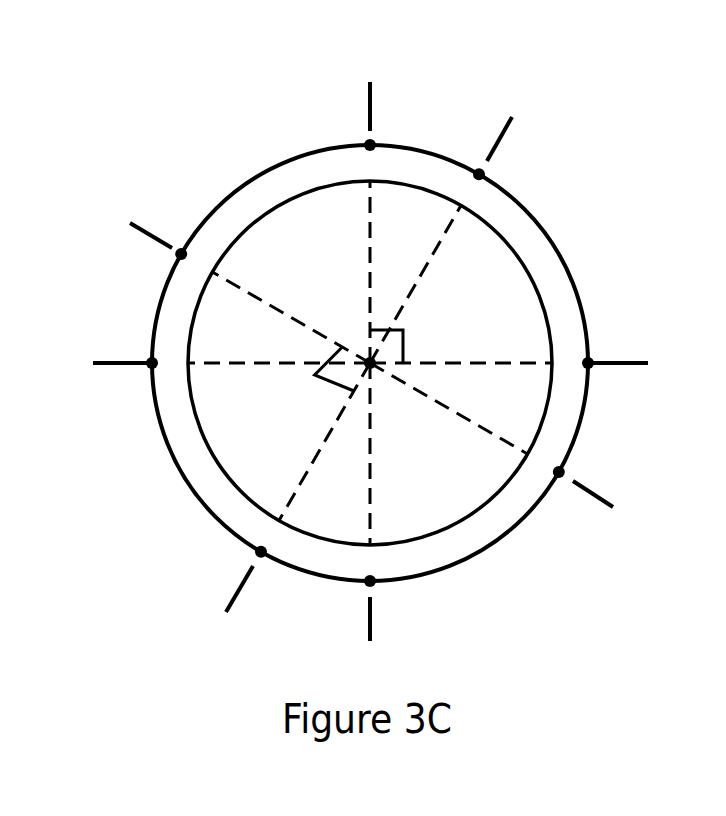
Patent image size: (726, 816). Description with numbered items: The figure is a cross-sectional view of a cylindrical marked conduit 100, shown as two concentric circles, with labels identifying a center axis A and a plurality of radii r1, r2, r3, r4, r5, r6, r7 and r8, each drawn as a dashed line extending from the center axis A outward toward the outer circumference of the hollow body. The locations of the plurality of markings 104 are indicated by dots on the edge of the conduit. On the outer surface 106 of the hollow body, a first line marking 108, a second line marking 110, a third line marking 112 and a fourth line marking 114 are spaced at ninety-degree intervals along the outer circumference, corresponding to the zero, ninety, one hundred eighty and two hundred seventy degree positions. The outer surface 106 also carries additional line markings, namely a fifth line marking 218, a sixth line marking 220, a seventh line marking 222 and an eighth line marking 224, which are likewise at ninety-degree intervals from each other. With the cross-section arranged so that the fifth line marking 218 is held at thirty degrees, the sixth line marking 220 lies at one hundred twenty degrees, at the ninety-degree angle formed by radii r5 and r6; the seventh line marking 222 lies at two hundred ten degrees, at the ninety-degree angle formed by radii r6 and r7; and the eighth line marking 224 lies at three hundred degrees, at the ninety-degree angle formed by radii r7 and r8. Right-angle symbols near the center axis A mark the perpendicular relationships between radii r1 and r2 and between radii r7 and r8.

The marked conduit 100 is at (176, 101).
The plurality of markings 104 is at (346, 123).
The outer surface 106 is at (268, 169).
The first line marking 108 is at (374, 143).
The second line marking 110 is at (592, 360).
The third line marking 112 is at (366, 585).
The fourth line marking 114 is at (149, 367).
The fifth line marking 218 is at (484, 176).
The sixth line marking 220 is at (564, 473).
The seventh line marking 222 is at (256, 553).
The eighth line marking 224 is at (178, 257).
The center axis A is at (366, 358).
The radius r1 is at (372, 280).
The radius r2 is at (484, 365).
The radius r3 is at (368, 436).
The radius r4 is at (250, 361).
The radius r5 is at (418, 285).
The radius r6 is at (452, 414).
The radius r7 is at (307, 468).
The radius r8 is at (263, 298).